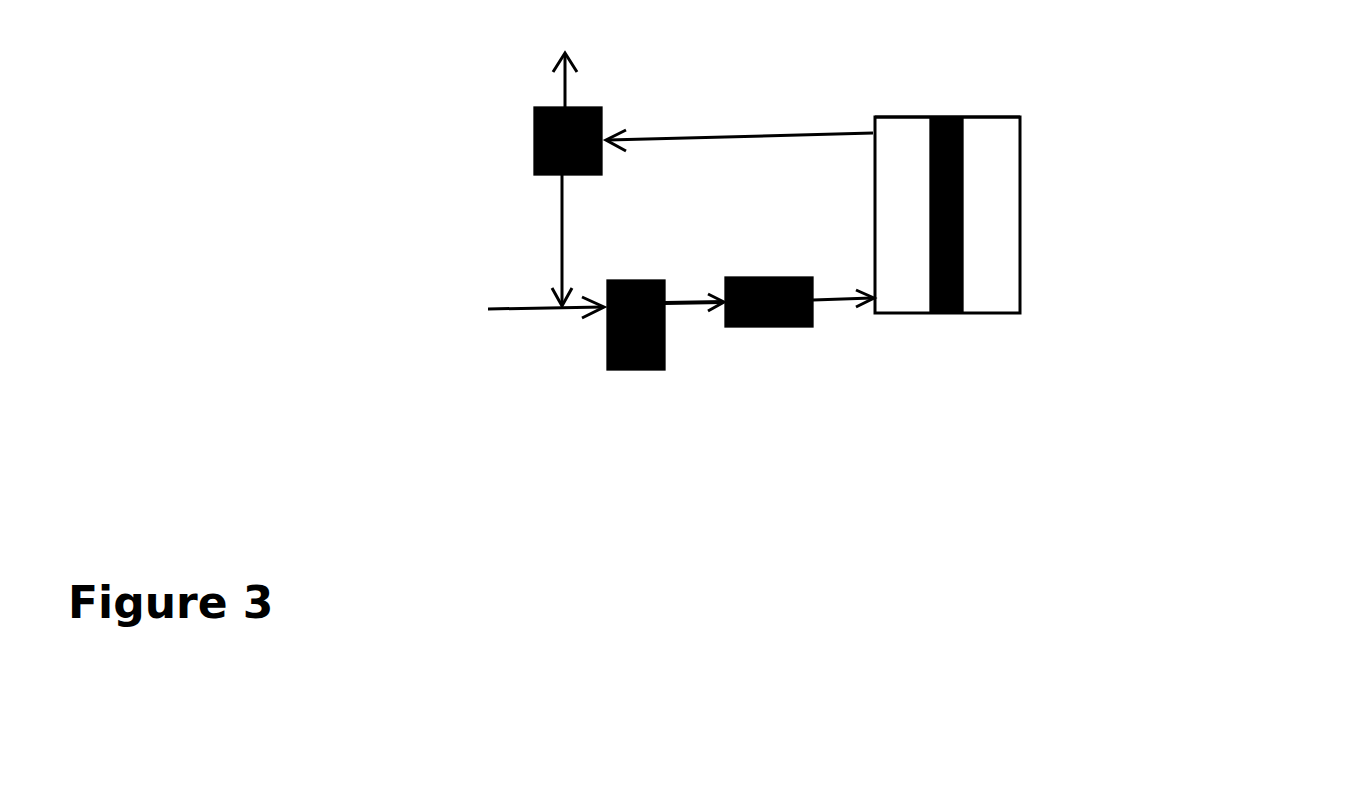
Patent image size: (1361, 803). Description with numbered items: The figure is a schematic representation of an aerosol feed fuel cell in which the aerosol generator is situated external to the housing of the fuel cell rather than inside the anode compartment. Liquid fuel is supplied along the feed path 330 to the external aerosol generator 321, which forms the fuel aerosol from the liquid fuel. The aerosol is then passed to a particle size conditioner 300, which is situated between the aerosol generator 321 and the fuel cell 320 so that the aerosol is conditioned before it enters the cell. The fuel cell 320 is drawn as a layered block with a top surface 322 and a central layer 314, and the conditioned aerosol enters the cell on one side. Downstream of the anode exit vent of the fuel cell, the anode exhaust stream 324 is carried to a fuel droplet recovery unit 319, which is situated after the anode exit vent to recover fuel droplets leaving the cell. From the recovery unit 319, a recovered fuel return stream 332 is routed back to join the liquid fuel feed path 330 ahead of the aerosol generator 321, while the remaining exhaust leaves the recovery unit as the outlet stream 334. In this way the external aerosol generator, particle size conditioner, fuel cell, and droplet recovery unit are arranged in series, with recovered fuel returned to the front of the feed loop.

The optical element / light source 300 is at (800, 330).
The fluid layer of assembly 314 is at (945, 315).
The detector 319 is at (528, 145).
The assembly 320 is at (1087, 222).
The light source 321 is at (636, 372).
The top surface of assembly 322 is at (900, 117).
The light reflected from assembly 324 is at (873, 135).
The input signal 330 is at (520, 312).
The control signal 332 is at (560, 248).
The output signal 334 is at (605, 45).